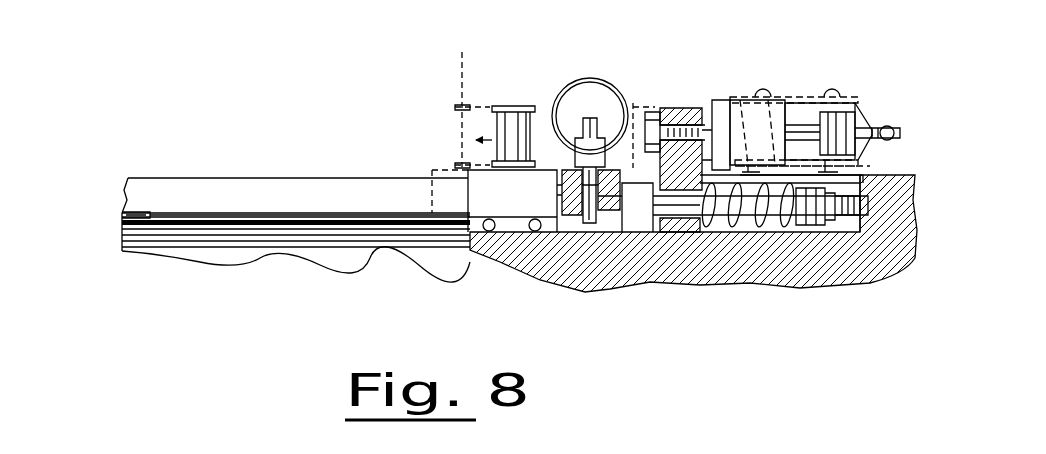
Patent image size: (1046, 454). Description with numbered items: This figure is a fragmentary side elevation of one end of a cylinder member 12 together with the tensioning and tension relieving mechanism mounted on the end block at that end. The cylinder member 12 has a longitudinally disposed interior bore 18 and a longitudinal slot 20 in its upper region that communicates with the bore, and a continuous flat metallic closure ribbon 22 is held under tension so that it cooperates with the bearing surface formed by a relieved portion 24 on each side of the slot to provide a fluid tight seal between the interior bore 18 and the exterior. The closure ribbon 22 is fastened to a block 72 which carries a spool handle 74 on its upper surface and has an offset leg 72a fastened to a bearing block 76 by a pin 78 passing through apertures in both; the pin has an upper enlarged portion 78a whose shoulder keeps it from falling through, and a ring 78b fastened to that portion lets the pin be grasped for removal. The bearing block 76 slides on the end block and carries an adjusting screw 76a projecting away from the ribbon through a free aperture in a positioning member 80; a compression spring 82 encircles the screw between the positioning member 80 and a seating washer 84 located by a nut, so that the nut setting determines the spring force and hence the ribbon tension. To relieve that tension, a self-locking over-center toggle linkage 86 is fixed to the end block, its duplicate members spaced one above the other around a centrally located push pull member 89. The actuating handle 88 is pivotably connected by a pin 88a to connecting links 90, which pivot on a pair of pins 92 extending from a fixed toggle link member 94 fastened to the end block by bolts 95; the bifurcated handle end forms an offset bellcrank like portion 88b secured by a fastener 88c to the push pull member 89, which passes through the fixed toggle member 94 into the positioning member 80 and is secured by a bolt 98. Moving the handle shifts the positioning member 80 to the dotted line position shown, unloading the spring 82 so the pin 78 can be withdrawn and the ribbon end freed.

The cylinder member 12 is at (434, 262).
The interior bore 18 is at (283, 260).
The longitudinal slot 20 is at (290, 207).
The closure ribbon 22 is at (358, 220).
The relieved portion 24 is at (122, 216).
The block 72 is at (530, 207).
The offset leg 72a is at (563, 167).
The spool handle 74 is at (500, 107).
The bearing block 76 is at (632, 222).
The adjusting screw 76a is at (700, 237).
The pin 78 is at (585, 226).
The upper enlarged portion 78a is at (607, 150).
The ring 78b is at (588, 79).
The positioning member 80 is at (683, 264).
The compression spring 82 is at (752, 232).
The seating washer 84 is at (792, 232).
The toggle linkage 86 is at (829, 55).
The actuating handle 88 is at (873, 130).
The pin 88a is at (840, 100).
The offset bellcrank like portion 88b is at (913, 117).
The fastener 88c is at (878, 141).
The push pull member 89 is at (807, 123).
The connecting links 90 is at (781, 97).
The pins 92 is at (765, 97).
The fixed toggle link member 94 is at (870, 258).
The bolts 95 is at (722, 110).
The bolt 98 is at (655, 113).